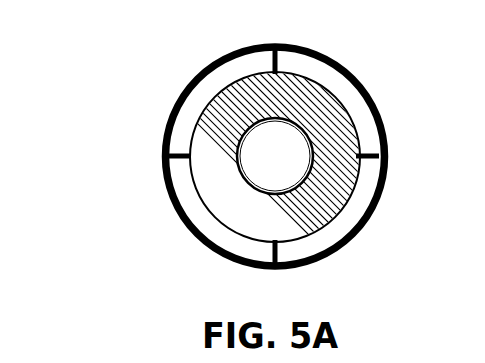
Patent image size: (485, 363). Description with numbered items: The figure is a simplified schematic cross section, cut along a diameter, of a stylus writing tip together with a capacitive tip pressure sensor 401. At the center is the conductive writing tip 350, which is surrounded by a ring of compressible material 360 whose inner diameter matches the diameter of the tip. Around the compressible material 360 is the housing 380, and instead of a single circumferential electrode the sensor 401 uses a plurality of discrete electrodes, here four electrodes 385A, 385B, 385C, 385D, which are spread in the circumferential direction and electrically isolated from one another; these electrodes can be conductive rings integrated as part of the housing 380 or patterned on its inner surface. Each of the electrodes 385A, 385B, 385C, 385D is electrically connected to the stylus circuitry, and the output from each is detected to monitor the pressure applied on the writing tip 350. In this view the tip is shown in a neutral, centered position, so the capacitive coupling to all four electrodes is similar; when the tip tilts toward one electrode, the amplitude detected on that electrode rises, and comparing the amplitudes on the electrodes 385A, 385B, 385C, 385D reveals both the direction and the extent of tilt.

The tip pressure sensor 401 is at (100, 148).
The writing tip 350 is at (288, 155).
The compressible material 360 is at (243, 80).
The housing 380 is at (318, 260).
The electrode 385A is at (346, 97).
The electrode 385B is at (357, 197).
The electrode 385C is at (208, 223).
The electrode 385D is at (195, 100).